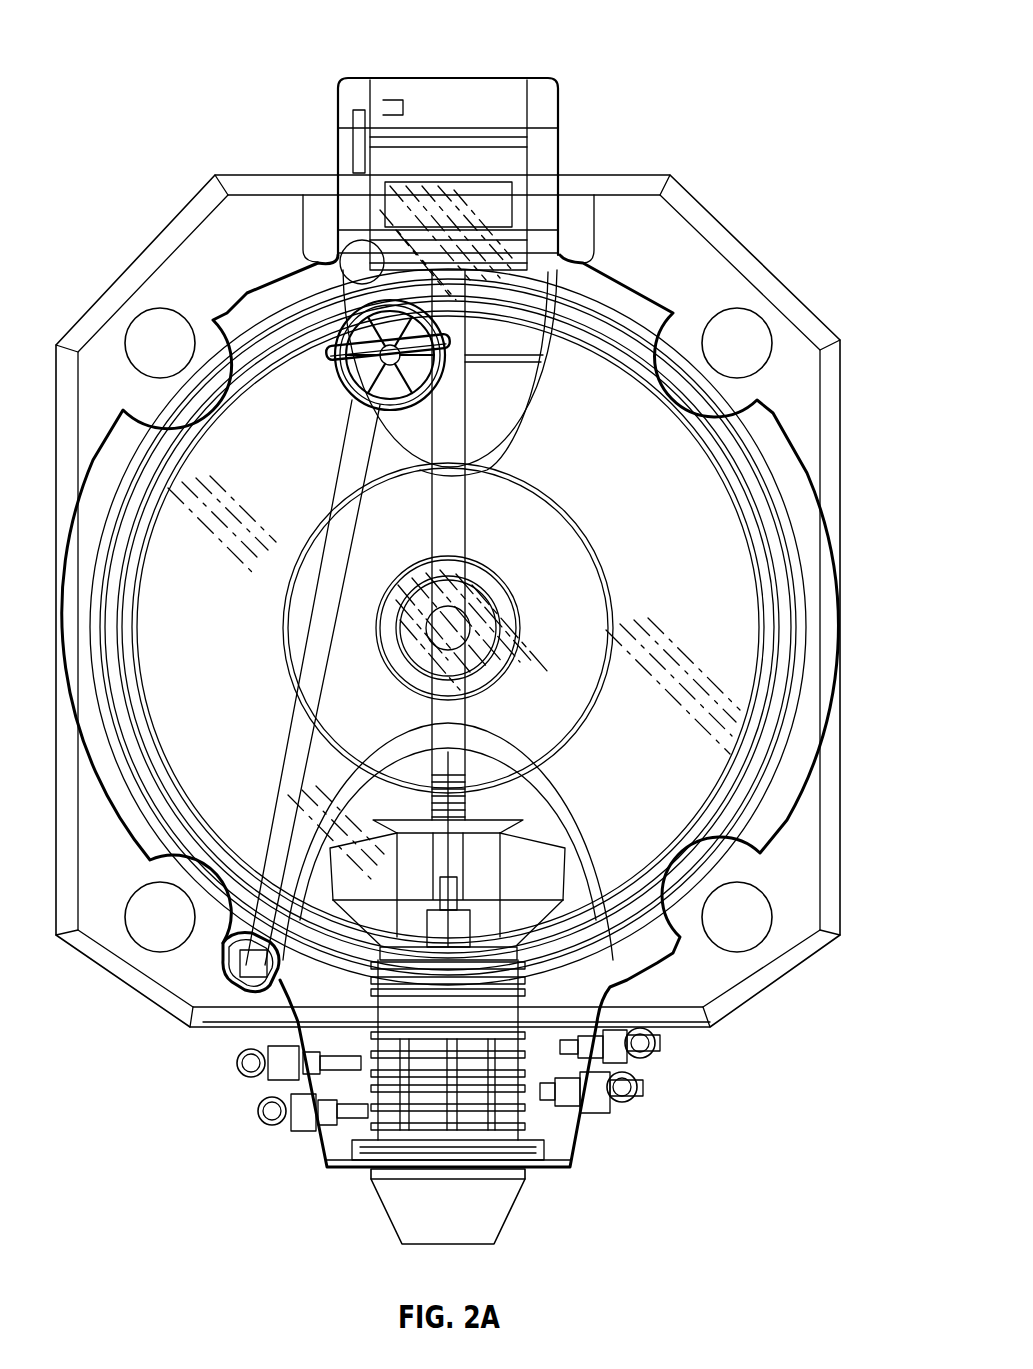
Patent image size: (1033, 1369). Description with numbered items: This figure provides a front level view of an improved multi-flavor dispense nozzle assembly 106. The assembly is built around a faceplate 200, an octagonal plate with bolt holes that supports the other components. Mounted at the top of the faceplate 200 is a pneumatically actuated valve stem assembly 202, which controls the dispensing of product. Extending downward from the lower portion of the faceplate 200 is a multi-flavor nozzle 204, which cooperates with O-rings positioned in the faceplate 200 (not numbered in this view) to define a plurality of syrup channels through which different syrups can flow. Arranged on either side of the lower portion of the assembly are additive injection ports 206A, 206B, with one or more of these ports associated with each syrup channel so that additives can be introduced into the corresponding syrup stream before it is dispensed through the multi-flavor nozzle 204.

The multi-flavor dispense nozzle assembly 106 is at (707, 40).
The faceplate 200 is at (748, 240).
The pneumatically actuated valve stem assembly 202 is at (457, 210).
The multi-flavor nozzle 204 is at (508, 1215).
The additive injection port 206A is at (615, 1090).
The additive injection port 206B is at (580, 1097).